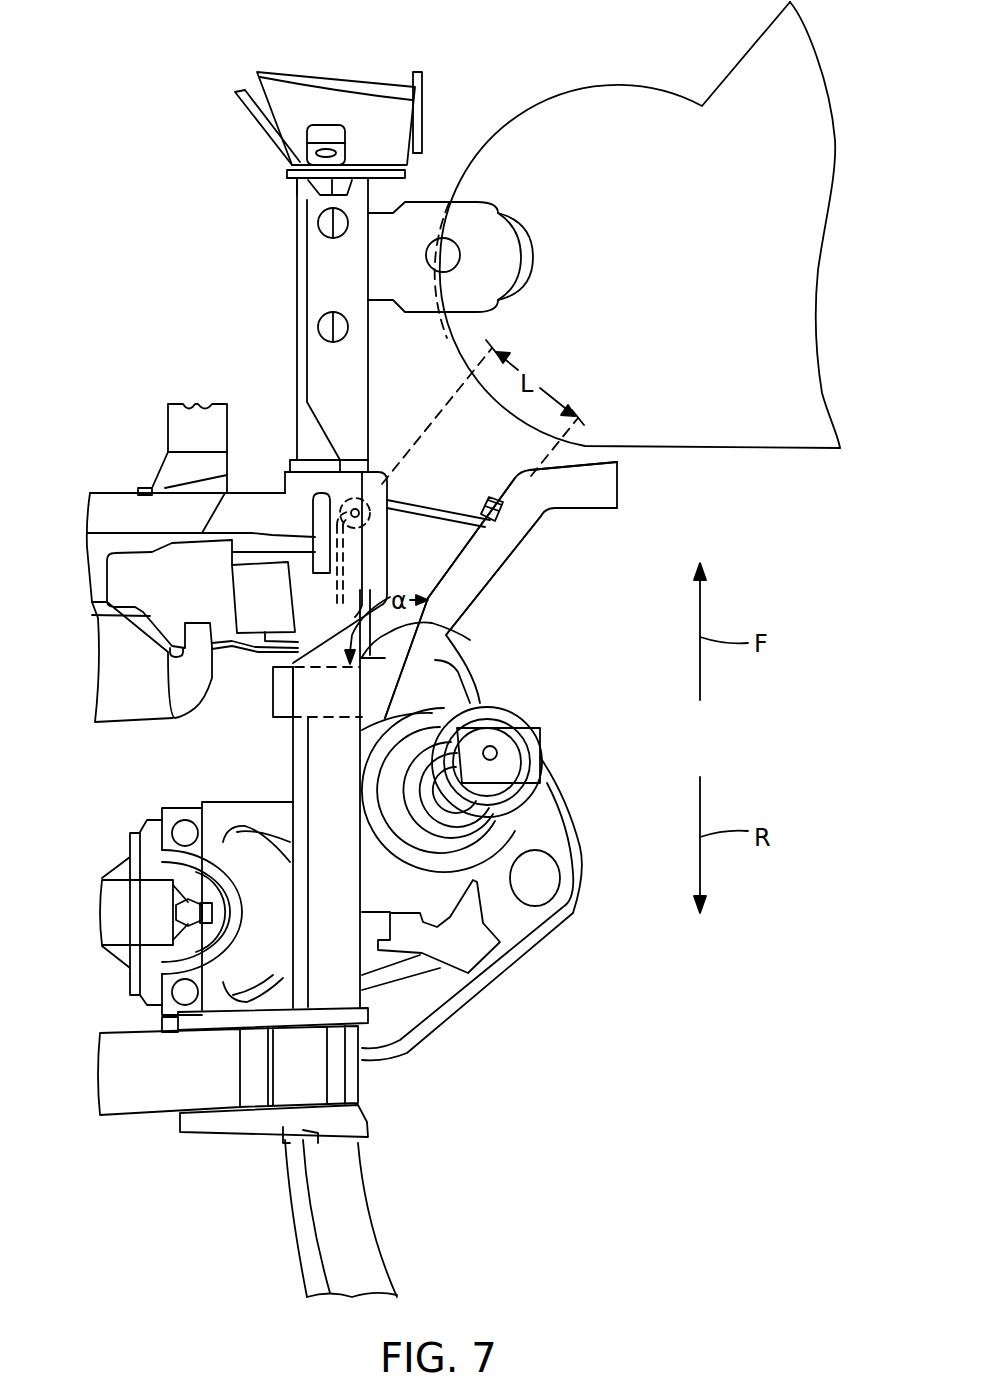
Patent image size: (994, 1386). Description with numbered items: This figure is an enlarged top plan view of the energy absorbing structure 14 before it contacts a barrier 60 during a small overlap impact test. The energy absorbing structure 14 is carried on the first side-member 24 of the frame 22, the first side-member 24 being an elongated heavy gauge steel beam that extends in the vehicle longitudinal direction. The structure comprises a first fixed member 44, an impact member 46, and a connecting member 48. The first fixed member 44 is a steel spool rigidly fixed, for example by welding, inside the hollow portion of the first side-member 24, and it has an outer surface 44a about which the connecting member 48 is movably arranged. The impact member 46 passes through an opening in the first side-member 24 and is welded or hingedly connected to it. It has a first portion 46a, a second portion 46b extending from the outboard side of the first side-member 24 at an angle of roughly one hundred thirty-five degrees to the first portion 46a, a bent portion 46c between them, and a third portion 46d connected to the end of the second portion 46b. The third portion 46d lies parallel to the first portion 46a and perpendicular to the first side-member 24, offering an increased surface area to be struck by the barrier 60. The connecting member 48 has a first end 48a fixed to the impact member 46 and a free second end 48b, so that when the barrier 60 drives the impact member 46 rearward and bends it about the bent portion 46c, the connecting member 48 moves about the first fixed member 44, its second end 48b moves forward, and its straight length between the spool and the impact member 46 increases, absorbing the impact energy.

The barrier 60 is at (552, 94).
The first side-member 24 is at (297, 250).
The frame 22 is at (120, 378).
The connecting member 48 is at (420, 503).
The first end of the connecting member 48a is at (503, 498).
The second end of the connecting member 48b is at (332, 617).
The first fixed member 44 is at (340, 518).
The outer surface of the first fixed member 44a is at (367, 526).
The impact member 46 is at (528, 543).
The first portion of the impact member 46a is at (282, 718).
The second portion of the impact member 46b is at (507, 572).
The bent portion of the impact member 46c is at (455, 633).
The third portion of the impact member 46d is at (593, 509).
The energy absorbing structure 14 is at (485, 600).